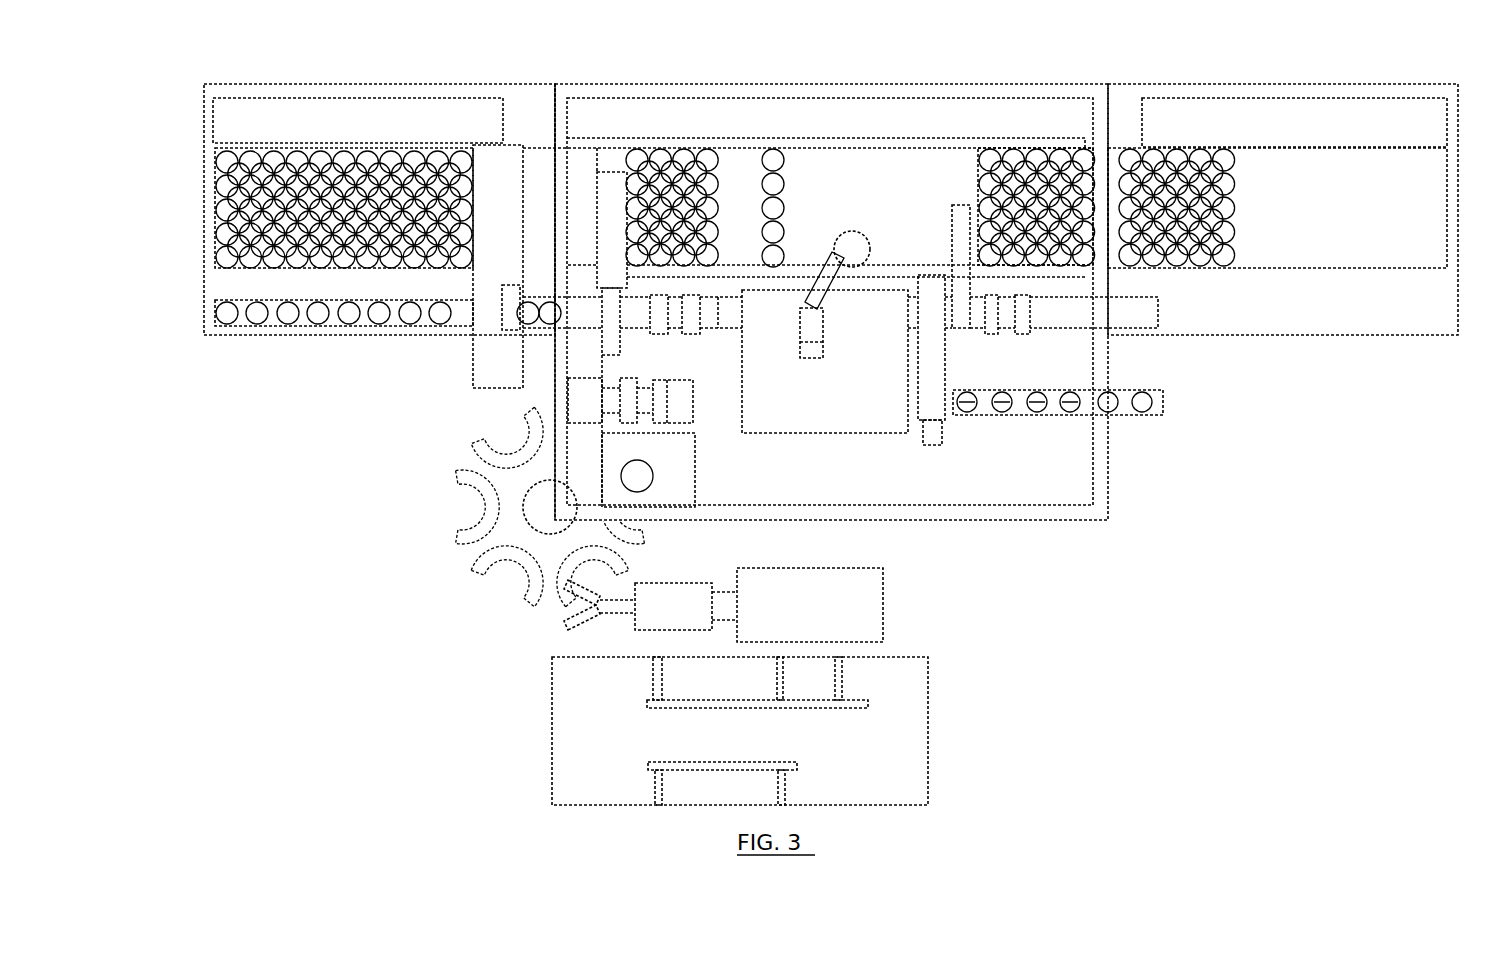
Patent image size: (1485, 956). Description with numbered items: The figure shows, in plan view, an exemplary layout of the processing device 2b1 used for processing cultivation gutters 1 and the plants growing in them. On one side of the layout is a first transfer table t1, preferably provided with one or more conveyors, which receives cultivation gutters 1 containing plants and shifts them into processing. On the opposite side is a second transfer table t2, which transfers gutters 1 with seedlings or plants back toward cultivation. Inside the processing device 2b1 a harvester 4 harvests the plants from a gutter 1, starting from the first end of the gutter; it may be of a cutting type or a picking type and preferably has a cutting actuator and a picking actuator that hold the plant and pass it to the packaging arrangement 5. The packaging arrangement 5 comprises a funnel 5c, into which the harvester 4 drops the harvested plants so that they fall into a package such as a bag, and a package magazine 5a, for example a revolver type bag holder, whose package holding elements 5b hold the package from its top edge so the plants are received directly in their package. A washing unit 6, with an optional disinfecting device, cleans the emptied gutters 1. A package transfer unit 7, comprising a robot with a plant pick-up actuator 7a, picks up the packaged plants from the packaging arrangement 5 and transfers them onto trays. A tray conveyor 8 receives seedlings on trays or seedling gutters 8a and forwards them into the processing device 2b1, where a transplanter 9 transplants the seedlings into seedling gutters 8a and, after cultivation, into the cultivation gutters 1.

The cultivation gutter 1 is at (210, 157).
The first transfer table t1 is at (208, 277).
The second transfer table t2 is at (1267, 232).
The processing device 2b1 is at (1235, 578).
The harvester 4 is at (626, 399).
The packaging arrangement 5 is at (491, 519).
The package magazine 5a is at (468, 522).
The package holding element 5b is at (490, 590).
The funnel 5c is at (670, 472).
The washing unit 6 is at (822, 402).
The package transfer unit 7 is at (845, 600).
The plant pick-up actuator 7a is at (578, 628).
The tray conveyor 8 is at (1060, 437).
The seedling gutter 8a is at (1002, 415).
The transplanter 9 is at (610, 255).